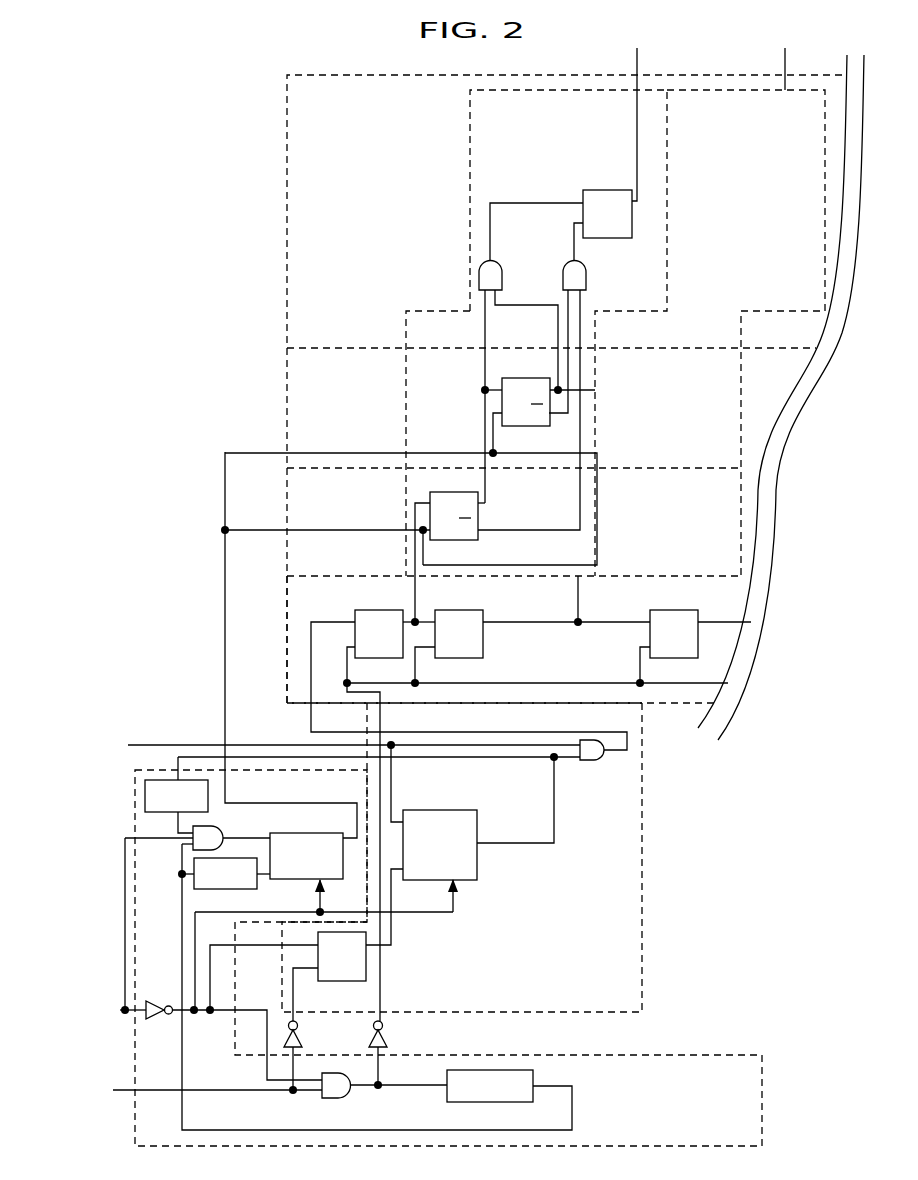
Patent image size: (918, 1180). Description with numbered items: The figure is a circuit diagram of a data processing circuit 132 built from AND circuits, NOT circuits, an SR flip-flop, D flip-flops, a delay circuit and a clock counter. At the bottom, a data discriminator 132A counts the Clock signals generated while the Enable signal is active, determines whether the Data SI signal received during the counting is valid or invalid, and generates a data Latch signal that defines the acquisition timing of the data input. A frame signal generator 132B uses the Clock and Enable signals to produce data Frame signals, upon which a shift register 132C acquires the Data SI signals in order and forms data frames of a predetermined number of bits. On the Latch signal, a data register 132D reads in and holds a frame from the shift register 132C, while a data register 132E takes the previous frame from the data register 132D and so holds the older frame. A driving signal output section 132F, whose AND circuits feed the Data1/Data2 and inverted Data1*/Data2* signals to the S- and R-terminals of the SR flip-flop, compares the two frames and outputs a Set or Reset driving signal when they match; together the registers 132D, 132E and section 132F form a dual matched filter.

The data processing circuit 132 is at (244, 246).
The data discriminator 132A is at (735, 1033).
The frame signal generator 132B is at (648, 828).
The shift register 132C is at (287, 638).
The data register 132D is at (287, 500).
The data register 132E is at (287, 400).
The driving signal output section 132F is at (287, 137).